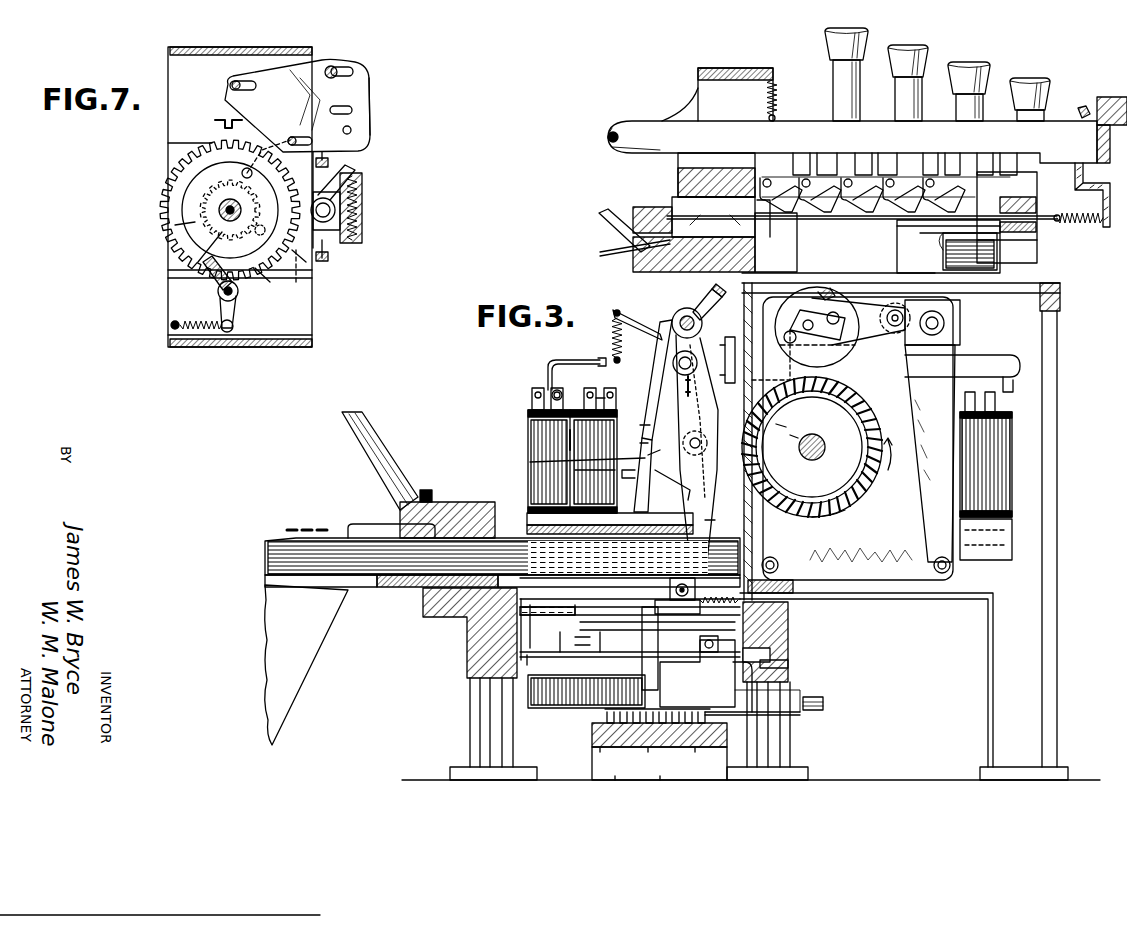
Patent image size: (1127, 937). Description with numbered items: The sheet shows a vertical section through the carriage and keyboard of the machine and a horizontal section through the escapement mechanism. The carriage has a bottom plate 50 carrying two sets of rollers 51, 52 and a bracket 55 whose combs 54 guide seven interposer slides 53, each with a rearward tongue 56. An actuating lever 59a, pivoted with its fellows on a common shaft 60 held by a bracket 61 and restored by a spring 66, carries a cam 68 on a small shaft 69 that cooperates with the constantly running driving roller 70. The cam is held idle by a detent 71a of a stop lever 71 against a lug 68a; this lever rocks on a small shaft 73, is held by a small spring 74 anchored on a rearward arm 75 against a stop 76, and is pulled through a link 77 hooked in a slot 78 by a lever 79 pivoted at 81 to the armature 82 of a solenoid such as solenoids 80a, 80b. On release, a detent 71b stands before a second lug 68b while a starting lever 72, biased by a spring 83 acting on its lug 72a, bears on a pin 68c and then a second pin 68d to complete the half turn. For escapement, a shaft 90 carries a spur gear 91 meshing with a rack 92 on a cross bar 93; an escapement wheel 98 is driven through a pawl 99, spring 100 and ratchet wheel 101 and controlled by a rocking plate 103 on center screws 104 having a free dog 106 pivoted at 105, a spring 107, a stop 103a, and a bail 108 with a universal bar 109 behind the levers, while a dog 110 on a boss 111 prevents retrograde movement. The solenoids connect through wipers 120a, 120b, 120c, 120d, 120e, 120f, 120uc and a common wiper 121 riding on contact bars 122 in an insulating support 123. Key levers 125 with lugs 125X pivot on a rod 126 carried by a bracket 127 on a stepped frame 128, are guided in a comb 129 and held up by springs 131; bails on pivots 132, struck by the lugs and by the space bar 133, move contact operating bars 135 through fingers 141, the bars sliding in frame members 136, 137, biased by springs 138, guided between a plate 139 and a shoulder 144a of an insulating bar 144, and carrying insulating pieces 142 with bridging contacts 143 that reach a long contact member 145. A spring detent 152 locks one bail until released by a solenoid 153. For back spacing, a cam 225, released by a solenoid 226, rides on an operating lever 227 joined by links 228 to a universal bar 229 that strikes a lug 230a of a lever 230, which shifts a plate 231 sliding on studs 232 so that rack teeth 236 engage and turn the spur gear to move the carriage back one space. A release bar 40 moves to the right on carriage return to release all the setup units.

In FIG. 3, the release bar 40 is at (340, 528).
In FIG. 3, the bottom plate 50 is at (672, 660).
In FIG. 3, the rollers 51 is at (776, 638).
In FIG. 3, the rollers 52 is at (790, 666).
In FIG. 3, the interposer slides 53 is at (668, 560).
In FIG. 3, the combs 54 is at (600, 598).
In FIG. 7, the bracket 55 is at (312, 320).
In FIG. 3, the rearwardly projecting tongue 56 is at (502, 580).
In FIG. 3, the actuating lever 59a is at (778, 424).
In FIG. 3, the common shaft 60 is at (688, 308).
In FIG. 3, the bracket 61 is at (625, 472).
In FIG. 3, the spring 66 is at (790, 312).
In FIG. 3, the cam 68 is at (763, 463).
In FIG. 3, the lug 68a is at (530, 463).
In FIG. 3, the second lug 68b is at (798, 447).
In FIG. 3, the pin 68c is at (676, 498).
In FIG. 3, the second pin 68d is at (790, 436).
In FIG. 3, the small shaft 69 is at (683, 452).
In FIG. 3, the driving roller 70 is at (832, 513).
In FIG. 3, the stop lever 71 is at (652, 404).
In FIG. 3, the detent 71a is at (641, 445).
In FIG. 3, the detent 71b is at (648, 455).
In FIG. 3, the starting lever 72 is at (718, 402).
In FIG. 3, the lug 72a is at (772, 372).
In FIG. 3, the small shaft 73 is at (660, 345).
In FIG. 3, the small spring 74 is at (611, 330).
In FIG. 3, the rearwardly extending arm 75 is at (627, 314).
In FIG. 3, the stop 76 is at (668, 318).
In FIG. 3, the link 77 is at (548, 378).
In FIG. 3, the slot 78 is at (596, 358).
In FIG. 3, the lever 79 is at (562, 394).
In FIG. 3, the solenoid 80a is at (532, 440).
In FIG. 3, the solenoid 80b is at (644, 425).
In FIG. 3, the pivot 81 is at (598, 398).
In FIG. 3, the armature 82 is at (600, 438).
In FIG. 3, the spring 83 is at (726, 352).
In FIG. 7, the shaft 90 is at (222, 210).
In FIG. 3, the shaft 90 is at (580, 626).
In FIG. 7, the spur gear 91 is at (188, 175).
In FIG. 3, the spur gear 91 is at (575, 605).
In FIG. 3, the rack 92 is at (540, 601).
In FIG. 3, the cross bar 93 is at (468, 628).
In FIG. 7, the escapement wheel 98 is at (265, 284).
In FIG. 7, the pawl 99 is at (297, 284).
In FIG. 7, the spring 100 is at (262, 138).
In FIG. 7, the ratchet wheel 101 is at (162, 235).
In FIG. 7, the rocking plate 103 is at (352, 237).
In FIG. 3, the rocking plate 103 is at (712, 652).
In FIG. 7, the stop 103a is at (306, 262).
In FIG. 7, the center screws 104 is at (330, 257).
In FIG. 7, the pivot 105 is at (353, 212).
In FIG. 7, the free dog 106 is at (336, 207).
In FIG. 7, the spring 107 is at (362, 186).
In FIG. 3, the bail 108 is at (676, 607).
In FIG. 3, the universal bar 109 is at (668, 590).
In FIG. 7, the dog 110 is at (210, 286).
In FIG. 7, the boss 111 is at (232, 300).
In FIG. 3, the wiper 120a is at (619, 759).
In FIG. 3, the wiper 120b is at (628, 774).
In FIG. 3, the wiper 120c is at (661, 759).
In FIG. 3, the wiper 120d is at (673, 774).
In FIG. 3, the wiper 120e is at (703, 759).
In FIG. 3, the wiper 120f is at (730, 742).
In FIG. 3, the wiper 120uc is at (732, 701).
In FIG. 3, the wiper 121 is at (770, 714).
In FIG. 3, the contact bars 122 is at (605, 718).
In FIG. 3, the insulating support 123 is at (592, 735).
In FIG. 3, the key lever 125 is at (796, 128).
In FIG. 3, the lugs 125X is at (912, 160).
In FIG. 3, the rod 126 is at (608, 134).
In FIG. 3, the bracket 127 is at (705, 105).
In FIG. 3, the stepped frame 128 is at (1038, 186).
In FIG. 3, the comb 129 is at (1082, 110).
In FIG. 3, the springs 131 is at (779, 90).
In FIG. 3, the pivots 132 is at (768, 180).
In FIG. 3, the space bar 133 is at (1108, 96).
In FIG. 3, the contact operating bars 135 is at (1040, 221).
In FIG. 3, the frame member 136 is at (1037, 206).
In FIG. 3, the frame member 137 is at (1035, 232).
In FIG. 3, the springs 138 is at (1080, 223).
In FIG. 3, the plate 139 is at (632, 212).
In FIG. 3, the finger 141 is at (770, 216).
In FIG. 3, the insulating piece 142 is at (685, 200).
In FIG. 3, the bridging contact member 143 is at (708, 272).
In FIG. 3, the bar of insulating material 144 is at (632, 244).
In FIG. 3, the shoulder 144a is at (601, 222).
In FIG. 3, the long contact member 145 is at (757, 245).
In FIG. 3, the spring detent 152 is at (958, 224).
In FIG. 3, the solenoid 153 is at (975, 255).
In FIG. 3, the cam 225 is at (840, 357).
In FIG. 3, the solenoid 226 is at (985, 478).
In FIG. 3, the operating lever 227 is at (920, 400).
In FIG. 3, the links 228 is at (878, 572).
In FIG. 3, the universal bar 229 is at (793, 594).
In FIG. 7, the lever 230 is at (368, 104).
In FIG. 3, the lever 230 is at (712, 522).
In FIG. 3, the lug 230a is at (772, 556).
In FIG. 7, the plate 231 is at (362, 82).
In FIG. 3, the plate 231 is at (635, 645).
In FIG. 7, the studs 232 is at (332, 66).
In FIG. 7, the rack teeth 236 is at (226, 121).